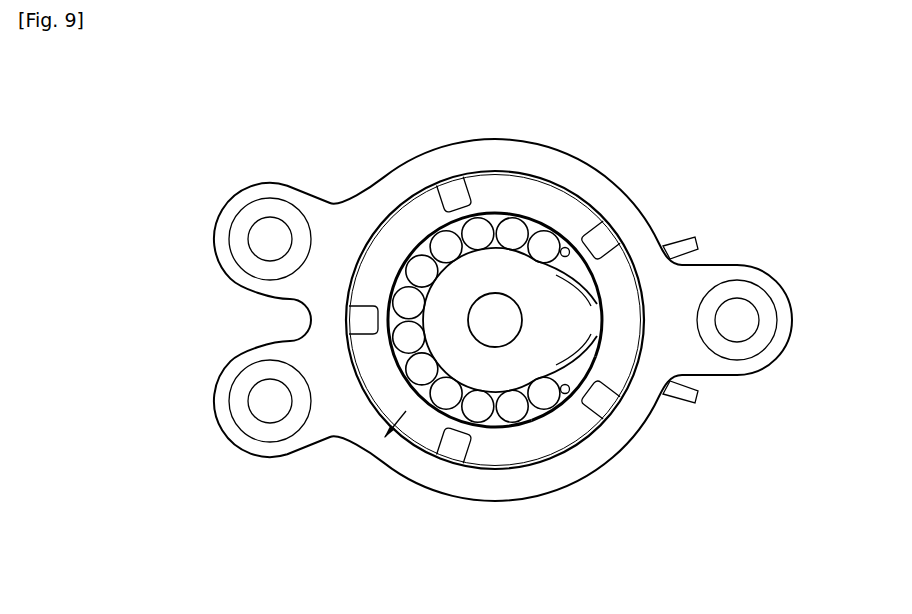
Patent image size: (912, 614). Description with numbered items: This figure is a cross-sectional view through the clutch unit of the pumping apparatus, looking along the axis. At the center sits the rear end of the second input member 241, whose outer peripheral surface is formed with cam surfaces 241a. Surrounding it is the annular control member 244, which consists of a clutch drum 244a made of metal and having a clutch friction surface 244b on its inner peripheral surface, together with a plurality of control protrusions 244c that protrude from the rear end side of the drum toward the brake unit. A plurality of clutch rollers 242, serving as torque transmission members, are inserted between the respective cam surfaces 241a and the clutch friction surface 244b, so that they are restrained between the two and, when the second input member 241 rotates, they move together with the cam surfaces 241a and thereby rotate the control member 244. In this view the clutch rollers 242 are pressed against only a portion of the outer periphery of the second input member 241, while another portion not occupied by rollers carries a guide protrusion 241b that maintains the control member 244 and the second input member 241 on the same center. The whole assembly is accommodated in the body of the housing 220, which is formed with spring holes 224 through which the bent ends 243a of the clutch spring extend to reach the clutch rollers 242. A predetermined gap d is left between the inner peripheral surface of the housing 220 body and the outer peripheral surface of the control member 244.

The housing 220 is at (320, 203).
The spring holes 224 is at (753, 360).
The second input member 241 is at (660, 243).
The cam surfaces 241a is at (581, 368).
The guide protrusion 241b is at (545, 293).
The clutch rollers 242 is at (514, 230).
The bent ends 243a is at (568, 396).
The control member 244 is at (405, 228).
The clutch drum 244a is at (576, 236).
The clutch friction surface 244b is at (535, 427).
The control protrusions 244c is at (452, 190).
The gap d is at (385, 437).